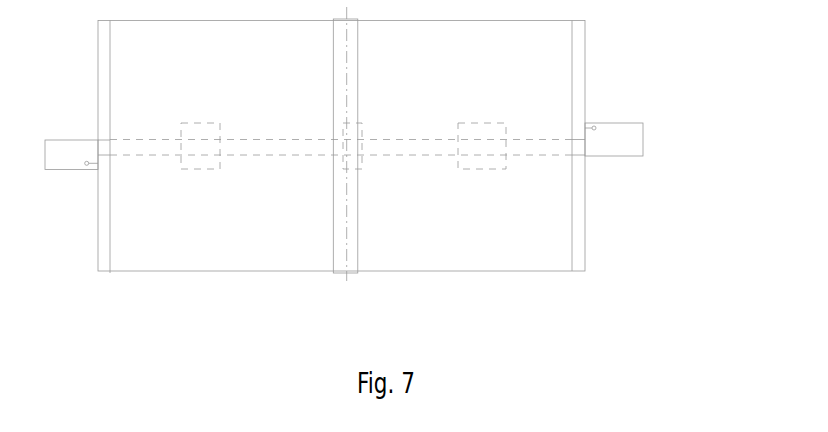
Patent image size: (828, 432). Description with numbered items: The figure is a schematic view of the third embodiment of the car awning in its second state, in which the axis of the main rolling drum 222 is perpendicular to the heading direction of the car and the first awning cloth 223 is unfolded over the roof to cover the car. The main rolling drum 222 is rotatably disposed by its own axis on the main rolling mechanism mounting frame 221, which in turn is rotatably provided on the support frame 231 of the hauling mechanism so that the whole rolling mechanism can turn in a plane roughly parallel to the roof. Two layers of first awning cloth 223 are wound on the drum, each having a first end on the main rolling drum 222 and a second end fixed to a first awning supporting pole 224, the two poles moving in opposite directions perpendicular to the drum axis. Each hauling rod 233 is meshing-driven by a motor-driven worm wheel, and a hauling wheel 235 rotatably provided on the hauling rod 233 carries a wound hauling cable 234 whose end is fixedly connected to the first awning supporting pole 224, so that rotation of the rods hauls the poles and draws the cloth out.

The main rolling mechanism mounting frame 221 is at (353, 273).
The main rolling drum 222 is at (353, 245).
The first awning cloth 223 is at (548, 243).
The first awning supporting pole 224 is at (582, 206).
The support frame 231 is at (465, 169).
The hauling rod 233 is at (593, 156).
The hauling cable 234 is at (588, 122).
The hauling wheel 235 is at (597, 122).